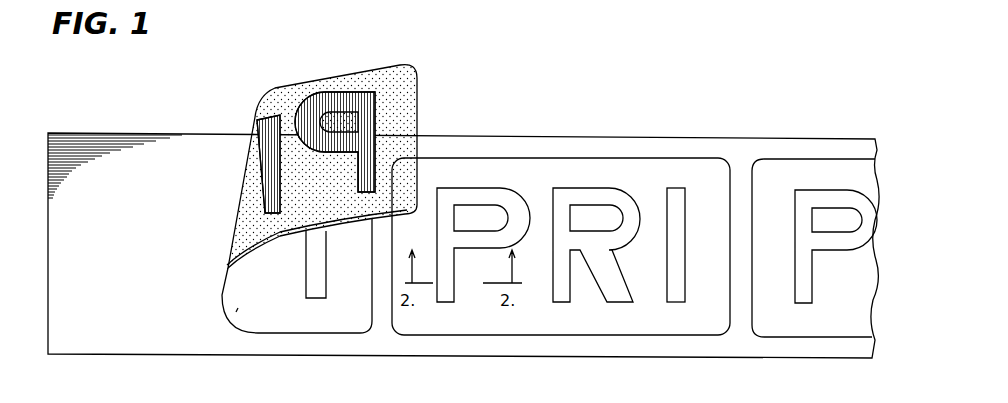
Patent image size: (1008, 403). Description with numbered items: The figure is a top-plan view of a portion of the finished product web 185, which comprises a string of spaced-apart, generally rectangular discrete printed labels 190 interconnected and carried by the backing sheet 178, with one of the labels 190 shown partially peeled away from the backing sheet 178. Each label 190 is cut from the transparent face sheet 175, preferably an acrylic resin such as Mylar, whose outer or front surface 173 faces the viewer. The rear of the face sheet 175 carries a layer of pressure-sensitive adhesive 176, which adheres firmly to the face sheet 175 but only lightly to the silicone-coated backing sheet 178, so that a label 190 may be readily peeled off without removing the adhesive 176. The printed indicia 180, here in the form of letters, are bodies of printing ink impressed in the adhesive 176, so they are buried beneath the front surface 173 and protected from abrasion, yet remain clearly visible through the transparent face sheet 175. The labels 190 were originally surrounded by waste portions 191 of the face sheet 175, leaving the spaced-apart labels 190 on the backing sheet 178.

The front surface 173 is at (297, 301).
The face sheet 175 is at (236, 313).
The pressure-sensitive adhesive 176 is at (238, 230).
The backing sheet 178 is at (111, 134).
The printed indicia 180 is at (327, 95).
The finished product web 185 is at (711, 104).
The label portions 190 is at (412, 62).
The waste portions 191 is at (741, 322).